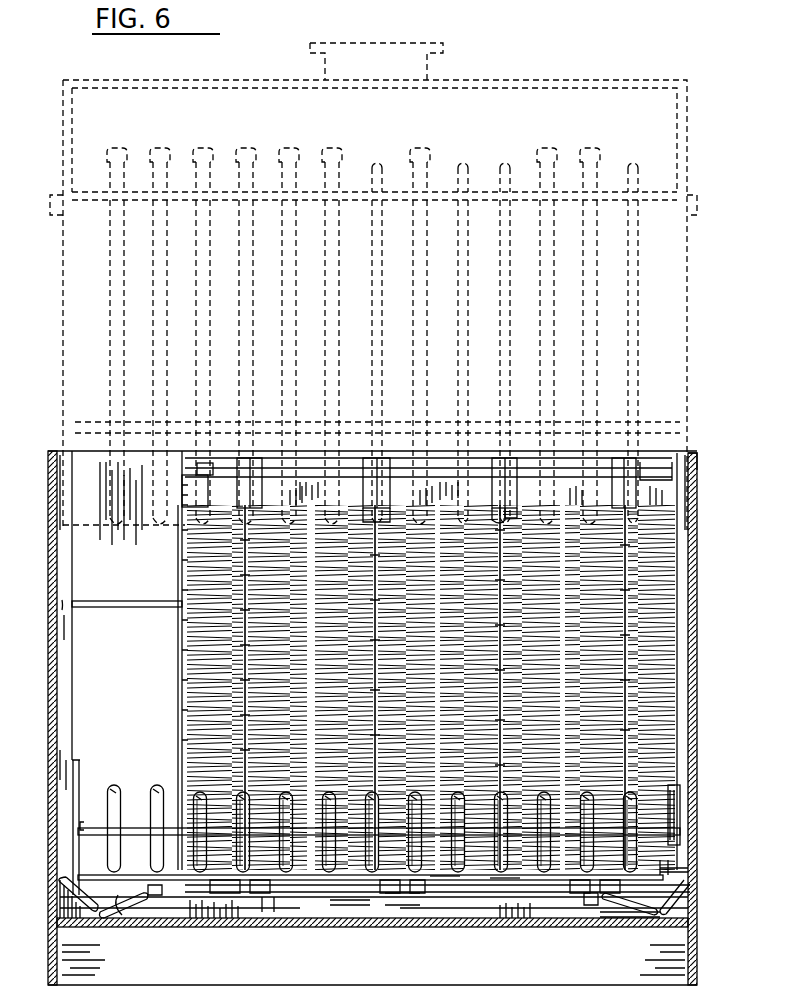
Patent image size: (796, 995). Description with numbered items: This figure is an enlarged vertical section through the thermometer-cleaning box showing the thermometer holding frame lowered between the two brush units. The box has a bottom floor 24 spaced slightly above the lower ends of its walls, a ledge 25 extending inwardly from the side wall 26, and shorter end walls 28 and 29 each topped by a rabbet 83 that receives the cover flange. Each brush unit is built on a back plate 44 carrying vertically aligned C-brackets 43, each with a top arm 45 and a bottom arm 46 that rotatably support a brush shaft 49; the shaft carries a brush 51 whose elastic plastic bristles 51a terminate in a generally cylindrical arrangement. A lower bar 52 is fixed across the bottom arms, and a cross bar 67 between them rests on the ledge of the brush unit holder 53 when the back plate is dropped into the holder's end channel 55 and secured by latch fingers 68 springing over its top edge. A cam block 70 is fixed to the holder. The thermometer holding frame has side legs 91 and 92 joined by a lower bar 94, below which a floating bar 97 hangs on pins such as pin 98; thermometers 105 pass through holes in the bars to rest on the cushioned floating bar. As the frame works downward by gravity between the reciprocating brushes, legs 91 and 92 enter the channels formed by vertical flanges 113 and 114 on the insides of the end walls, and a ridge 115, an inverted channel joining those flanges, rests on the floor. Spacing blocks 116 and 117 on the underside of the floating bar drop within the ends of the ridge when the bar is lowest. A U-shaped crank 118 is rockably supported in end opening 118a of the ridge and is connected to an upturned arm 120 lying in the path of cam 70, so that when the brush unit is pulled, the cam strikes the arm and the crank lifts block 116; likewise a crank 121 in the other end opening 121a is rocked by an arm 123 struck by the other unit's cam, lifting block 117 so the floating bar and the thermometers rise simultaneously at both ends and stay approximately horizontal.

The bottom floor 24 is at (298, 926).
The ledge 25 is at (146, 606).
The side wall 26 is at (176, 470).
The end wall 28 is at (50, 617).
The end wall 29 is at (690, 682).
The C-bracket 43 is at (512, 465).
The back plate 44 is at (440, 490).
The top arm 45 is at (377, 465).
The bottom arm 46 is at (500, 880).
The brush shaft 49 is at (498, 488).
The brush 51 is at (192, 755).
The bristles 51a is at (185, 692).
The lower bar 52 is at (402, 898).
The brush unit holder 53 is at (203, 906).
The channel 55 is at (195, 660).
The cross bar 67 is at (268, 912).
The latch finger 68 is at (206, 465).
The cam block 70 is at (672, 872).
The rabbet 83 is at (708, 465).
The side leg 91 is at (76, 802).
The side leg 92 is at (672, 815).
The lower bar 94 is at (78, 831).
The floating bar 97 is at (440, 878).
The pin 98 is at (88, 877).
The thermometer 105 is at (162, 808).
The vertical flange 113 is at (60, 466).
The vertical flange 114 is at (688, 512).
The ridge 115 is at (350, 912).
The spacing block 116 is at (154, 896).
The spacing block 117 is at (593, 895).
The U-shaped crank 118 is at (116, 924).
The end opening 118a is at (141, 920).
The upturned arm 120 is at (63, 890).
The crank 121 is at (625, 905).
The end opening 121a is at (672, 915).
The arm 123 is at (672, 888).